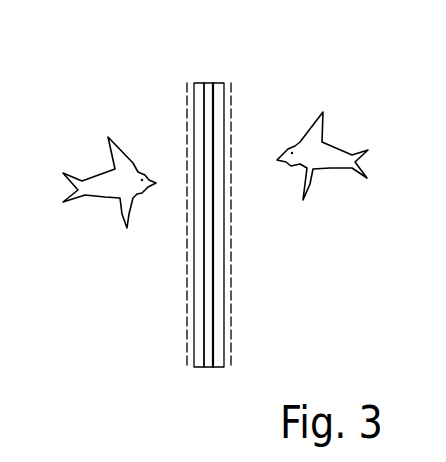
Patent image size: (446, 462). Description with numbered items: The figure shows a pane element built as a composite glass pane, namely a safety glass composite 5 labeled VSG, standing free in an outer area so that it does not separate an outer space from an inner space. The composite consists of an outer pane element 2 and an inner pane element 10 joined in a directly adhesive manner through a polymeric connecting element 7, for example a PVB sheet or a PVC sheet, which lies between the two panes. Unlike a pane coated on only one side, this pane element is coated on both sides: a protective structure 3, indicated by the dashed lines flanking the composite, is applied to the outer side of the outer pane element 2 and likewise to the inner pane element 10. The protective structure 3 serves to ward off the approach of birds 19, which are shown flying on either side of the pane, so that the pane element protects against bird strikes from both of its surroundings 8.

The outer pane element 2 is at (224, 82).
The protective structure 3 is at (187, 260).
The safety glass composite 5 is at (209, 209).
The polymeric connecting element 7 is at (209, 82).
The environment side of glazing 8 is at (217, 236).
The inner pane element 10 is at (190, 93).
The birds 19 is at (100, 173).